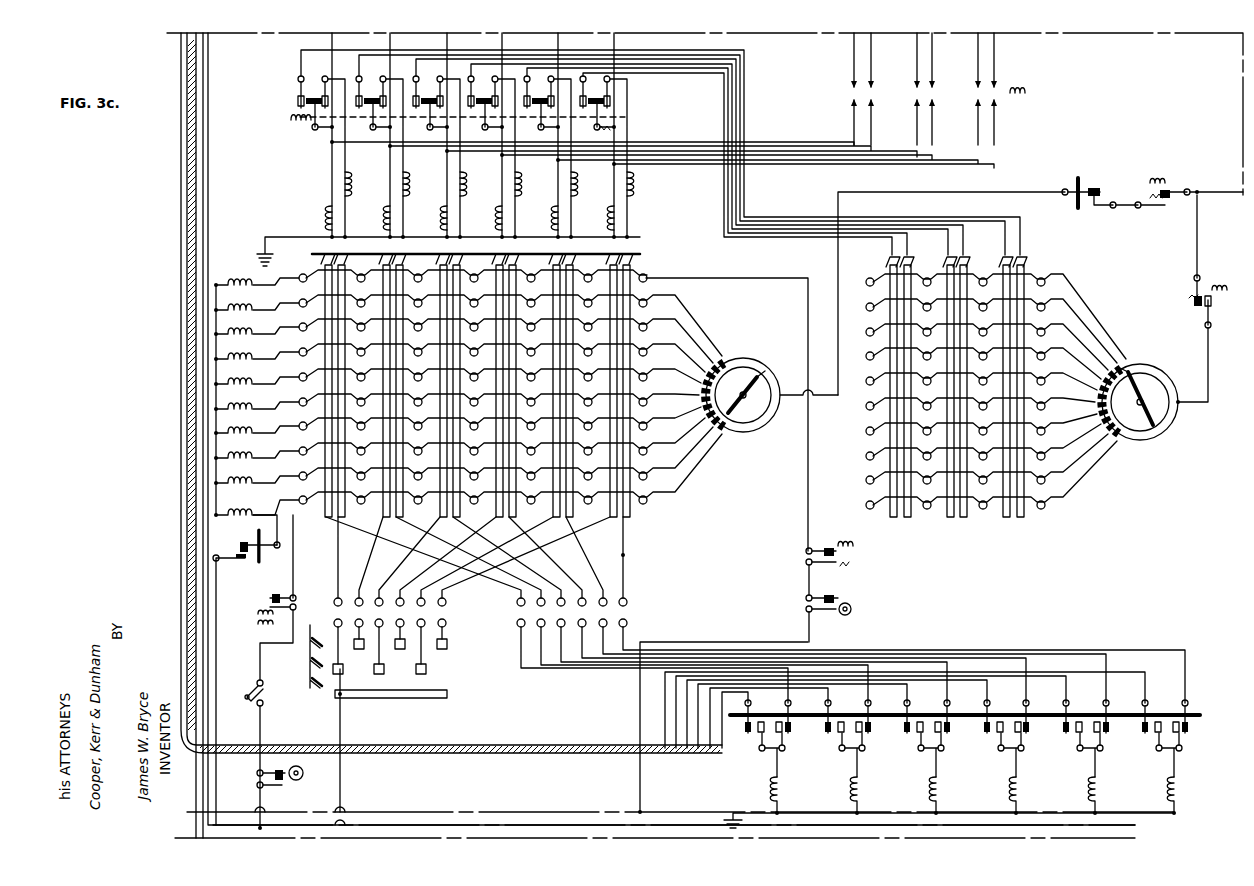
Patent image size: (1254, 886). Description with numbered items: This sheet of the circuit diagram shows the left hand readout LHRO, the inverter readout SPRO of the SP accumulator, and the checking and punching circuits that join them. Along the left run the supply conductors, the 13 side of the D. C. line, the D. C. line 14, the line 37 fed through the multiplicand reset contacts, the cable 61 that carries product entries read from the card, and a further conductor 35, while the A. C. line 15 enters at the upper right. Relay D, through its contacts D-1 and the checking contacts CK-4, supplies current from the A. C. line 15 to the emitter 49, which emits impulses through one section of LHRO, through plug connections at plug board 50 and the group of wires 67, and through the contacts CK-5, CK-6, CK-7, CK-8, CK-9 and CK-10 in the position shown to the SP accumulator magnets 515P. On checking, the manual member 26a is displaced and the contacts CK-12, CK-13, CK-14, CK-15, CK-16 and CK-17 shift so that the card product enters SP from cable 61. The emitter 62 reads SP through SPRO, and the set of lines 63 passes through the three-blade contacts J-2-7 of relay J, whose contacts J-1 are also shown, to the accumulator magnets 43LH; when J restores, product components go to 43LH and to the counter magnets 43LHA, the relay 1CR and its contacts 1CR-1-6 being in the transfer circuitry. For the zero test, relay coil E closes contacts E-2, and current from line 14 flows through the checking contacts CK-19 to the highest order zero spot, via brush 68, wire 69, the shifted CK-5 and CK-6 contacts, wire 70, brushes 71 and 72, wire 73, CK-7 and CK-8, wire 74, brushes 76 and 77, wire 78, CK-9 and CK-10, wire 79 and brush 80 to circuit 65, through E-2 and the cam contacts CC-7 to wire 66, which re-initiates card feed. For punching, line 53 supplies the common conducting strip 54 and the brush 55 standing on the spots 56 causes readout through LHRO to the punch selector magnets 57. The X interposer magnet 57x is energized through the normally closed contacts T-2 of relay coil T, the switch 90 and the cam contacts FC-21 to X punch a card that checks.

The side of the D. C. line 13 is at (210, 160).
The bus conductor 35 is at (198, 184).
The cable 61 is at (180, 333).
The line 37 is at (185, 402).
The D. C. line 14 is at (215, 660).
The A. C. line 15 is at (1243, 113).
The relay J is at (290, 122).
The three-blade contacts J-2-7 is at (540, 98).
The counter magnets 43LHA is at (344, 182).
The accumulator magnets 43LH is at (380, 212).
The set of lines 63 is at (780, 232).
The relay 1CR is at (1028, 92).
The relay contacts 1CR-1-6 is at (983, 105).
The punch selector magnets 57 is at (236, 280).
The X interposer magnet 57x is at (228, 520).
The brush 68 is at (320, 254).
The brush 71 is at (398, 257).
The brush 72 is at (448, 256).
The brush 76 is at (515, 256).
The brush 77 is at (560, 256).
The brush 80 is at (648, 256).
The emitter 49 is at (754, 410).
The circuit 65 is at (812, 487).
The LH readout LHRO is at (531, 393).
The wire 69 is at (365, 538).
The wire 70 is at (420, 533).
The wire 73 is at (480, 548).
The wire 74 is at (562, 575).
The wire 78 is at (575, 560).
The wire 79 is at (623, 555).
The spots 56 is at (345, 672).
The plug board 50 is at (632, 613).
The group of wires 67 is at (615, 657).
The common conducting strip 54 is at (395, 700).
The brush 55 is at (310, 672).
The line 53 is at (340, 788).
The wire 66 is at (500, 818).
The checking contacts CK-19 is at (248, 565).
The relay contacts T-2 is at (295, 590).
The relay coil T is at (255, 620).
The switch 90 is at (264, 700).
The cam contacts FC-21 is at (278, 768).
The inverter readout SPRO is at (1031, 402).
The emitter 62 is at (1168, 425).
The checking contacts CK-4 is at (1100, 212).
The relay contacts D-1 is at (1175, 212).
The relay D is at (1165, 180).
The relay contacts J-1 is at (1200, 318).
The relay contacts E-2 is at (822, 565).
The relay coil E is at (855, 548).
The cam contacts CC-7 is at (822, 612).
The manual member 26a is at (1150, 705).
The checking contacts CK-12 is at (756, 740).
The checking contacts CK-13 is at (830, 740).
The checking contacts CK-14 is at (912, 740).
The checking contacts CK-15 is at (990, 740).
The checking contacts CK-16 is at (1070, 740).
The checking contacts CK-17 is at (1150, 740).
The checking contacts CK-10 is at (1188, 735).
The checking contacts CK-5 is at (773, 740).
The checking contacts CK-6 is at (862, 740).
The checking contacts CK-7 is at (940, 740).
The checking contacts CK-8 is at (1020, 740).
The checking contacts CK-9 is at (1100, 740).
The SP accumulator magnets 515P is at (1020, 790).